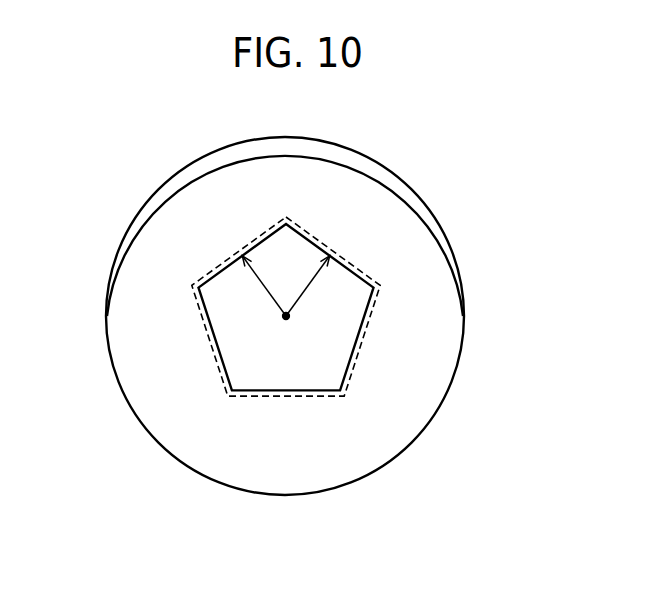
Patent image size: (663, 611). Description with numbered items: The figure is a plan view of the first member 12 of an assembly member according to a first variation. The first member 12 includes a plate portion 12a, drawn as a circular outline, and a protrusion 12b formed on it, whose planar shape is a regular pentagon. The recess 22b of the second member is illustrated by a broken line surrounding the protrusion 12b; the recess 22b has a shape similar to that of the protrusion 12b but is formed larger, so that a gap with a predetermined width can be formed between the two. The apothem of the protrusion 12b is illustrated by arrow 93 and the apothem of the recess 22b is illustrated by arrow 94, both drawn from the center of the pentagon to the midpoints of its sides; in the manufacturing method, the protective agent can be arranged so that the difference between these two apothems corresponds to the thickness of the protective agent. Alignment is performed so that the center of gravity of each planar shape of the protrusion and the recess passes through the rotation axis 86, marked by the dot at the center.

The first member 12 is at (380, 162).
The plate portion 12a is at (428, 252).
The protrusion 12b is at (312, 353).
The recess 22b is at (346, 391).
The rotation axis 86 is at (286, 318).
The arrow 94 is at (263, 287).
The arrow 93 is at (307, 285).